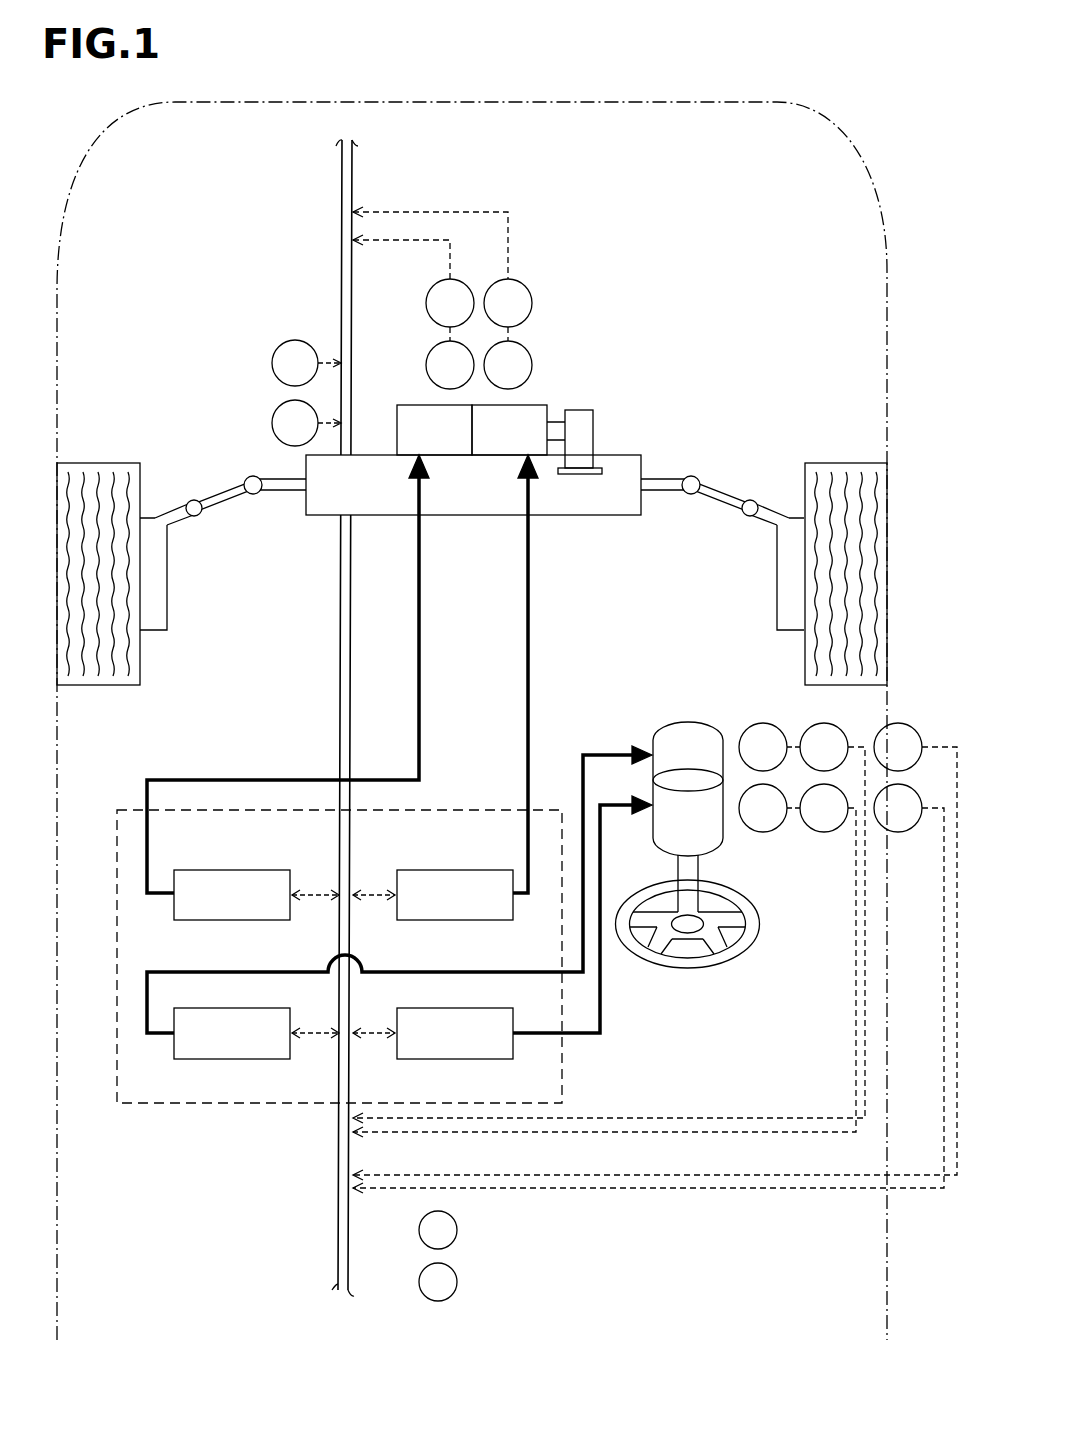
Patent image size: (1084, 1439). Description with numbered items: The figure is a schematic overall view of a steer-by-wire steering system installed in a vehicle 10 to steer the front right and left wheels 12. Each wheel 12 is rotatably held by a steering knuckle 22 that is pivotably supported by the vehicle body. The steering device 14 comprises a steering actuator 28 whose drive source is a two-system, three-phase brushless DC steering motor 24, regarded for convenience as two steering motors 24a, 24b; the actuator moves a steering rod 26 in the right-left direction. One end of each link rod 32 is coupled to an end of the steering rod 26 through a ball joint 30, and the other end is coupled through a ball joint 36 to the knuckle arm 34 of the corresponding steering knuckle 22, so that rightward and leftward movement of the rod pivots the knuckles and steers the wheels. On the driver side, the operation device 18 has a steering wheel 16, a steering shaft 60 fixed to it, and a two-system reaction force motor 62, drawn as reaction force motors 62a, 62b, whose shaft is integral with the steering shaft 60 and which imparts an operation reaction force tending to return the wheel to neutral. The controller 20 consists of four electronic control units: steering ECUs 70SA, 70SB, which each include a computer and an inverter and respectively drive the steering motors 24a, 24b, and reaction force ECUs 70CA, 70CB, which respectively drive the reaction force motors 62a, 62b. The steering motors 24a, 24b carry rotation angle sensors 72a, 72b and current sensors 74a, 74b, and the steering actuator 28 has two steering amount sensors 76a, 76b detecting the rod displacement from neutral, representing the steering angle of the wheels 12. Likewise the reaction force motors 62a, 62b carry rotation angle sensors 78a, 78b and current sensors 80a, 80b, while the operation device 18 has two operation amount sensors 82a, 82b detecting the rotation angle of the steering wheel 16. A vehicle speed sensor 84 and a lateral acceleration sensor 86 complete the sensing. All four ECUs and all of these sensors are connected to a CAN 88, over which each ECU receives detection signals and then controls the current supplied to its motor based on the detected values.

The vehicle 10 is at (873, 197).
The wheel 12 is at (97, 465).
The steering device 14 is at (638, 266).
The steering wheel 16 is at (700, 963).
The operation device 18 is at (782, 988).
The controller 20 is at (158, 1105).
The steering knuckle 22 is at (158, 596).
The steering motor 24 is at (508, 471).
The steering motor 24a is at (443, 448).
The steering motor 24b is at (497, 448).
The steering rod 26 is at (661, 483).
The steering actuator 28 is at (576, 549).
The ball joint 30 is at (253, 496).
The link rod 32 is at (222, 500).
The knuckle arm 34 is at (174, 513).
The ball joint 36 is at (195, 517).
The steering shaft 60 is at (699, 868).
The reaction force motor 62 is at (649, 767).
The reaction force motor 62a is at (660, 737).
The reaction force motor 62b is at (660, 815).
The steering ECU 70SA is at (193, 871).
The steering ECU 70SB is at (487, 870).
The reaction force ECU 70CA is at (193, 1057).
The reaction force ECU 70CB is at (495, 1059).
The rotation angle sensor 72a is at (437, 285).
The rotation angle sensor 72b is at (519, 285).
The current sensor 74a is at (436, 350).
The current sensor 74b is at (524, 350).
The steering amount sensor 76a is at (274, 356).
The steering amount sensor 76b is at (274, 416).
The rotation angle sensor 78a is at (818, 726).
The rotation angle sensor 78b is at (822, 832).
The current sensor 80a is at (761, 723).
The current sensor 80b is at (768, 832).
The operation amount sensor 82a is at (898, 726).
The operation amount sensor 82b is at (898, 832).
The vehicle speed sensor 84 is at (457, 1228).
The lateral acceleration sensor 86 is at (457, 1282).
The CAN 88 is at (340, 700).